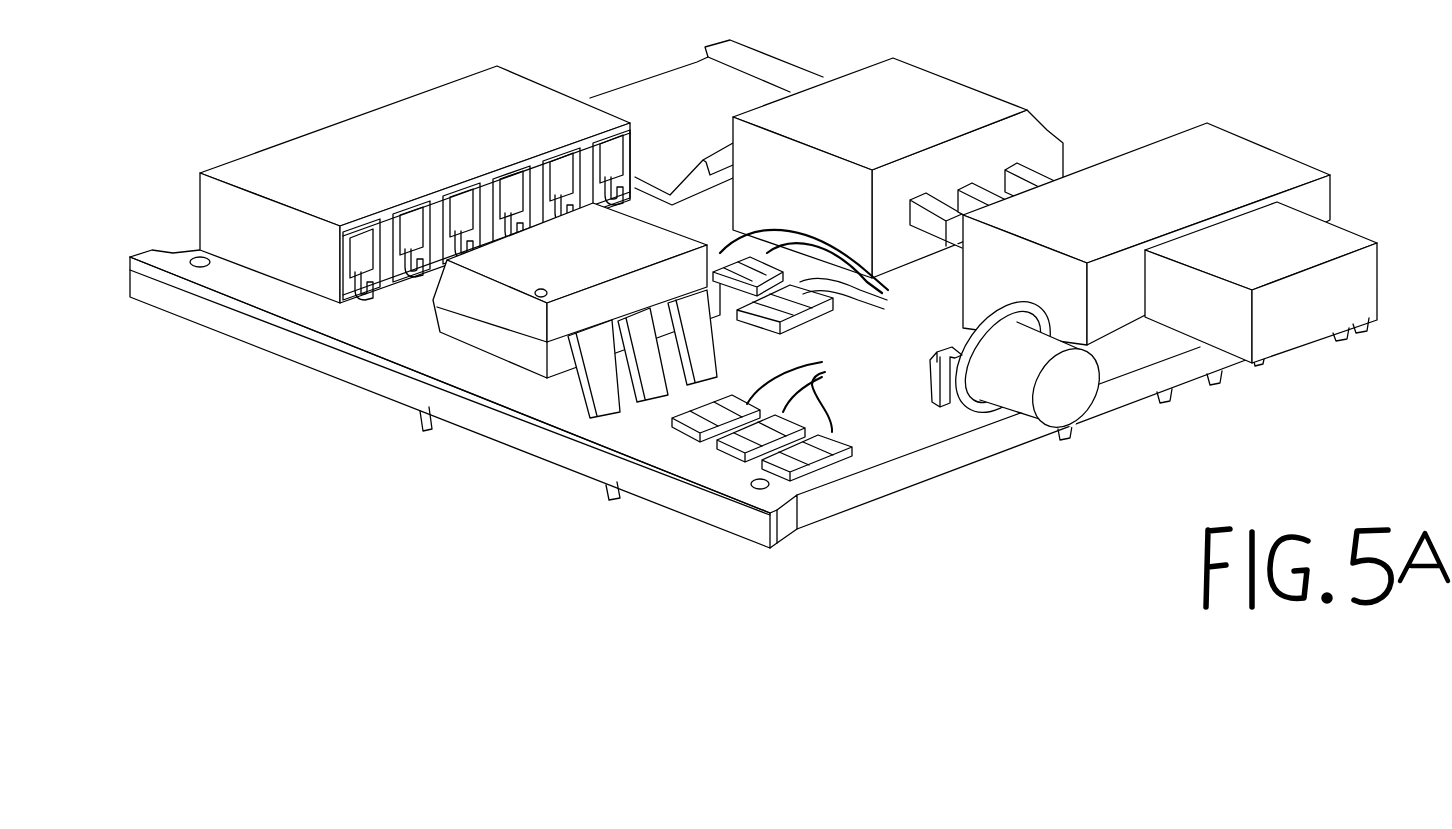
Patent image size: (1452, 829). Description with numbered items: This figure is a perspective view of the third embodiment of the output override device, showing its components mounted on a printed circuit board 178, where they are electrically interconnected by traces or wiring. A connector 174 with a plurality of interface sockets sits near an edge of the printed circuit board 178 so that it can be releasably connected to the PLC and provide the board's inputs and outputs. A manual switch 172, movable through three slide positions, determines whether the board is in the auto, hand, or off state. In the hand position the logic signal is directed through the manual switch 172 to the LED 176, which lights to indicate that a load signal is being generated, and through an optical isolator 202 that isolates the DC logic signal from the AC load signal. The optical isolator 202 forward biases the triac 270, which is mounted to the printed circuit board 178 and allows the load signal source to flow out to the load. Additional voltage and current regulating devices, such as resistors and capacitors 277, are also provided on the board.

The manual switch 172 is at (1207, 200).
The connector 174 is at (462, 145).
The light emitting diode (LED) 176 is at (1063, 393).
The printed circuit board 178 is at (862, 490).
The optical isolator 202 is at (612, 268).
The triac 270 is at (948, 90).
The capacitors 277 is at (806, 355).